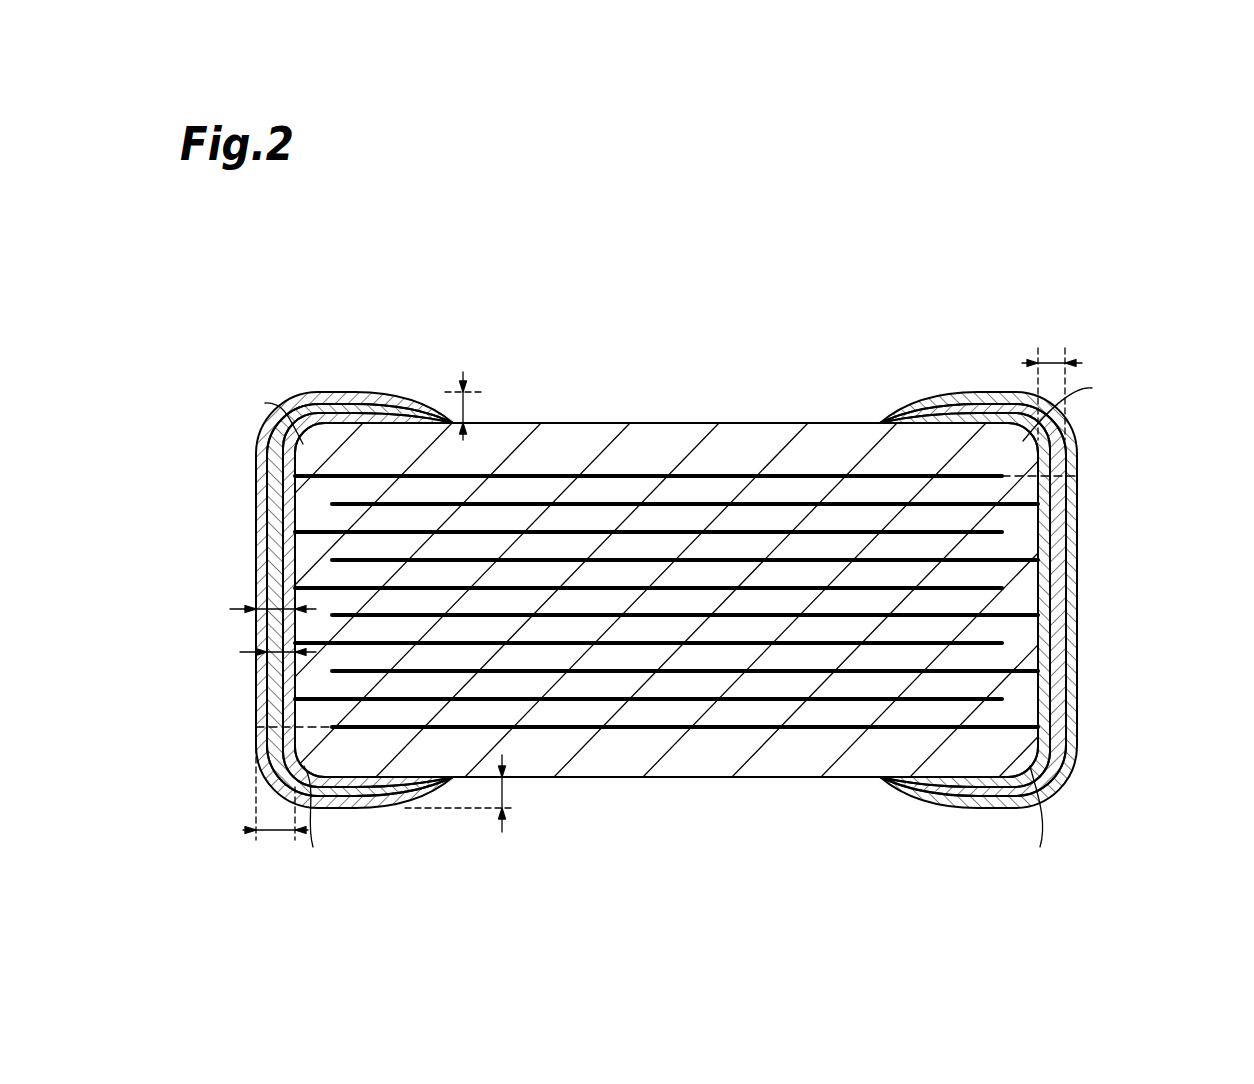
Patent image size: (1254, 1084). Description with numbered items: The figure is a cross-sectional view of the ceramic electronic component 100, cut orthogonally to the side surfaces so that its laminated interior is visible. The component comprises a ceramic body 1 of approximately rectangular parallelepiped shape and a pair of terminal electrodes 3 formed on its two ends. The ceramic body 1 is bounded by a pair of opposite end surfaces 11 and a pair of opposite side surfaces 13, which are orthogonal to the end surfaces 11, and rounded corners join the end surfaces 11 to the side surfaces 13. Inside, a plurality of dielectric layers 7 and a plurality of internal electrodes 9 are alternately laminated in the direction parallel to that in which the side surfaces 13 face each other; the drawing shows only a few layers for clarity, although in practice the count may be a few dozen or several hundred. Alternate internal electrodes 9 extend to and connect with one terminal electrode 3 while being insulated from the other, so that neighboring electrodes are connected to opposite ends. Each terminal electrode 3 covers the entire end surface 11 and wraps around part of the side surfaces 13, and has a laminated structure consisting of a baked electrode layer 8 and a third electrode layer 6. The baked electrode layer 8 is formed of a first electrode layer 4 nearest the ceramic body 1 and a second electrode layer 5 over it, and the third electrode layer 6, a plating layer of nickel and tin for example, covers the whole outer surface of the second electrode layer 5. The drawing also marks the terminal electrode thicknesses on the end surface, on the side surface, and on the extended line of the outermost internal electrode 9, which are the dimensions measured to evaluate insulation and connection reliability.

The ceramic electronic component 100 is at (1136, 236).
The ceramic body 1 is at (602, 424).
The terminal electrode 3 is at (666, 539).
The first electrode layer 4 is at (312, 347).
The second electrode layer 5 is at (322, 411).
The third electrode layer 6 is at (300, 405).
The dielectric layer 7 is at (556, 437).
The baked electrode layer 8 is at (666, 551).
The internal electrode 9 is at (642, 475).
The end surface 11 is at (283, 524).
The side surface 13 is at (773, 423).